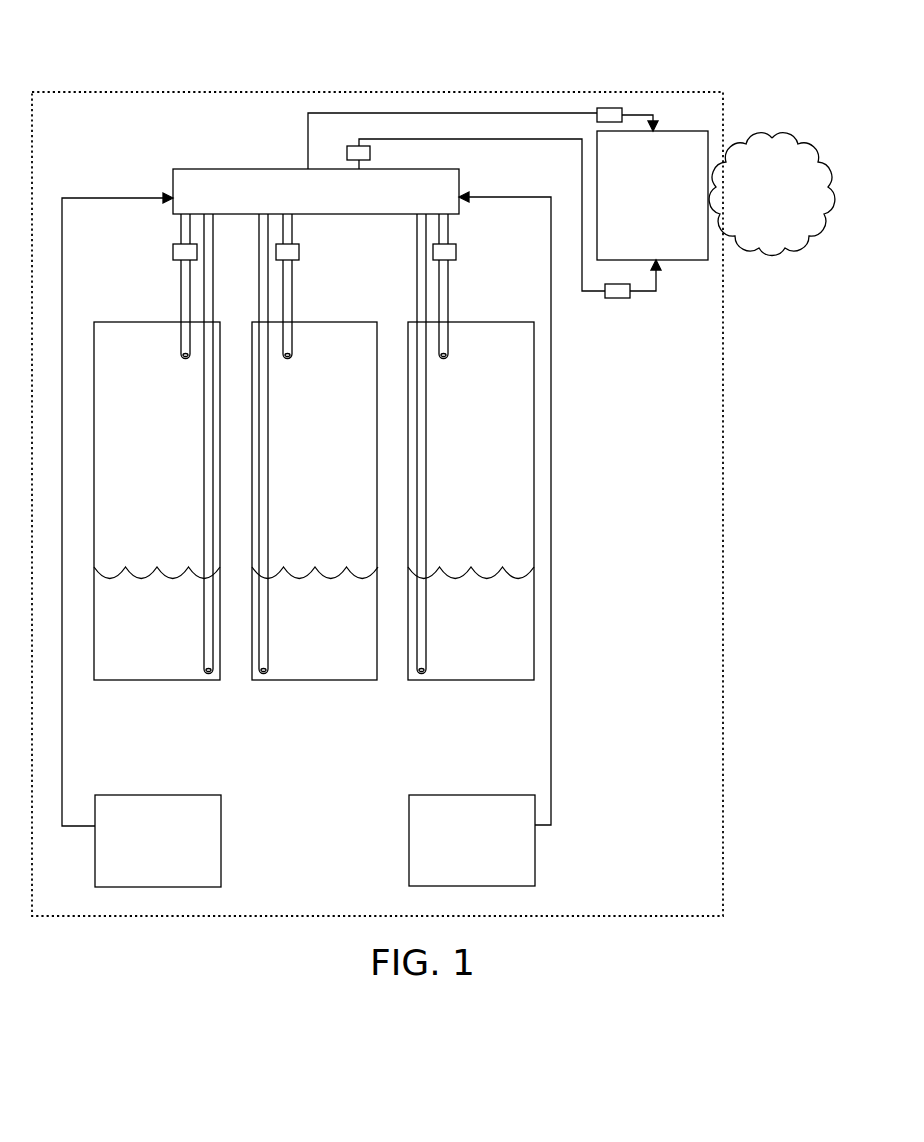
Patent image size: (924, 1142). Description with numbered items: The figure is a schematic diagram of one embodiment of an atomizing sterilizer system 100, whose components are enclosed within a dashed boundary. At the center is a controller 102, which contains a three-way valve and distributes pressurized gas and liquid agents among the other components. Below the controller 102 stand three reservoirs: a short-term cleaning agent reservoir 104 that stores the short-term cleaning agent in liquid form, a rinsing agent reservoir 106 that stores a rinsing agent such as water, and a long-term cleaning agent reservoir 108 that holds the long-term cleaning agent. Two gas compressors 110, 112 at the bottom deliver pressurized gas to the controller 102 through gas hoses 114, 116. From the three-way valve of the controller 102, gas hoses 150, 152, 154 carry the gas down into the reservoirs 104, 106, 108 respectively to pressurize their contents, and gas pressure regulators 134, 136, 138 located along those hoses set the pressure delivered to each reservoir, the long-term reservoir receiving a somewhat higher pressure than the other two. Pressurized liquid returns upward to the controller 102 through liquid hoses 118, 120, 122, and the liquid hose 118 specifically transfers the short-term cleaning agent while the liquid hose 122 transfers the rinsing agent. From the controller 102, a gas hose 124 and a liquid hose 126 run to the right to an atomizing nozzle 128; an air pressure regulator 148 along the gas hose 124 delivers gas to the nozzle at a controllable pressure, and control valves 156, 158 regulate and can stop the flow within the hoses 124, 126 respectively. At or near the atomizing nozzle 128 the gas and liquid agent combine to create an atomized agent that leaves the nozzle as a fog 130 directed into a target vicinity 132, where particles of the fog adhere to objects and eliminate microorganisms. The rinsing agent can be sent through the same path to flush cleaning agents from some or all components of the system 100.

The atomizing sterilizer system 100 is at (112, 91).
The controller 102 is at (235, 169).
The short-term cleaning agent reservoir 104 is at (207, 682).
The rinsing agent reservoir 106 is at (365, 682).
The long-term cleaning agent reservoir 108 is at (517, 682).
The gas compressor 110 is at (148, 795).
The gas compressor 112 is at (462, 795).
The gas hose 114 is at (117, 197).
The gas hose 116 is at (493, 197).
The liquid hose 118 is at (213, 262).
The liquid hose 120 is at (259, 278).
The liquid hose 122 is at (417, 290).
The gas hose 124 is at (512, 139).
The liquid hose 126 is at (482, 113).
The atomizing nozzle 128 is at (687, 262).
The fog 130 is at (780, 253).
The target vicinity 132 is at (783, 66).
The gas pressure regulator 134 is at (173, 252).
The gas pressure regulator 136 is at (323, 248).
The gas pressure regulator 138 is at (456, 254).
The air pressure regulator 148 is at (370, 153).
The gas hose 150 is at (178, 222).
The gas hose 152 is at (319, 293).
The gas hose 154 is at (449, 285).
The control valve 156 is at (615, 298).
The control valve 158 is at (608, 108).